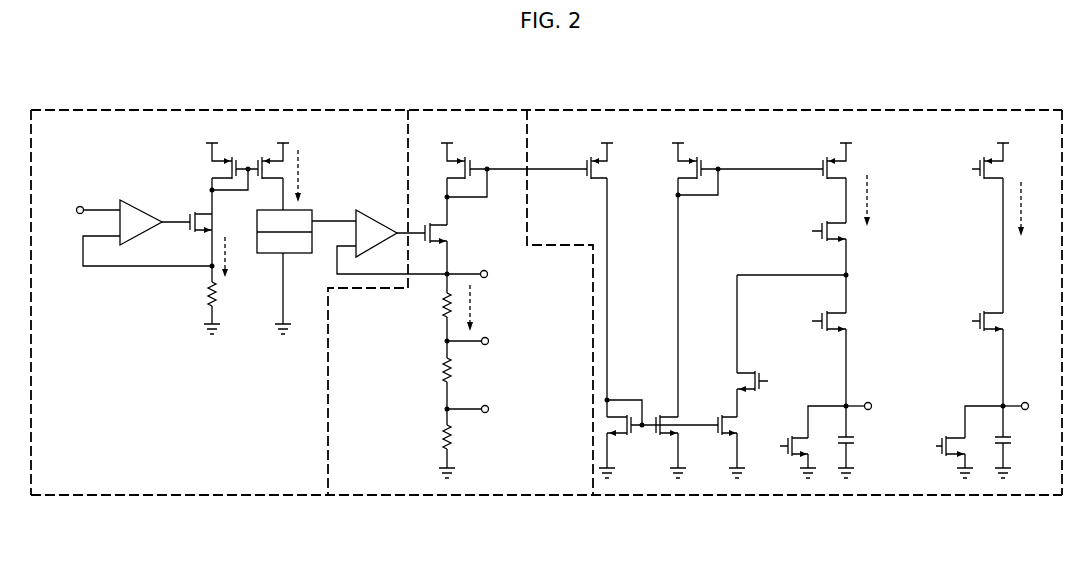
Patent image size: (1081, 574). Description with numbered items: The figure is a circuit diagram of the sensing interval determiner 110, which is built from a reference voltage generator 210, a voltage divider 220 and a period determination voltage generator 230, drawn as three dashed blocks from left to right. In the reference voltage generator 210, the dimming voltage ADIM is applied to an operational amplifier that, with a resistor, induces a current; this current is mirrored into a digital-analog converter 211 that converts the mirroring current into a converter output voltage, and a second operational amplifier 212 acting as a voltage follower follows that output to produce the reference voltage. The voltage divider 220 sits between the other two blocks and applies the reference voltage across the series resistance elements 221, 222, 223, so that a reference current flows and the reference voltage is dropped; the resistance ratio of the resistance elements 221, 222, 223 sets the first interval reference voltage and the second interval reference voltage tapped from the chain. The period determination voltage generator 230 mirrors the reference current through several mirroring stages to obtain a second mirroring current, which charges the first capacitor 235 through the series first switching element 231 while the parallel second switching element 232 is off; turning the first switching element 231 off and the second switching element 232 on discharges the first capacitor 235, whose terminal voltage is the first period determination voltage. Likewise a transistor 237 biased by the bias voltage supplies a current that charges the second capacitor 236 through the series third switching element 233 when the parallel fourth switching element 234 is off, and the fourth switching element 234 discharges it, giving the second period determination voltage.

The sensing interval determiner 110 is at (575, 87).
The reference voltage generator 210 is at (180, 497).
The DAC and counter 211 is at (266, 253).
The operational amplifier 212 is at (383, 210).
The voltage divider 220 is at (445, 497).
The resistance element 221 is at (386, 305).
The resistance element 222 is at (386, 370).
The resistance element 223 is at (386, 437).
The period determination voltage generator 230 is at (830, 497).
The first switching element 231 is at (849, 318).
The second switching element 232 is at (787, 457).
The third switching element 233 is at (1006, 320).
The fourth switching element 234 is at (940, 457).
The first capacitor 235 is at (866, 447).
The second capacitor 236 is at (1020, 447).
The transistor 237 is at (1006, 168).